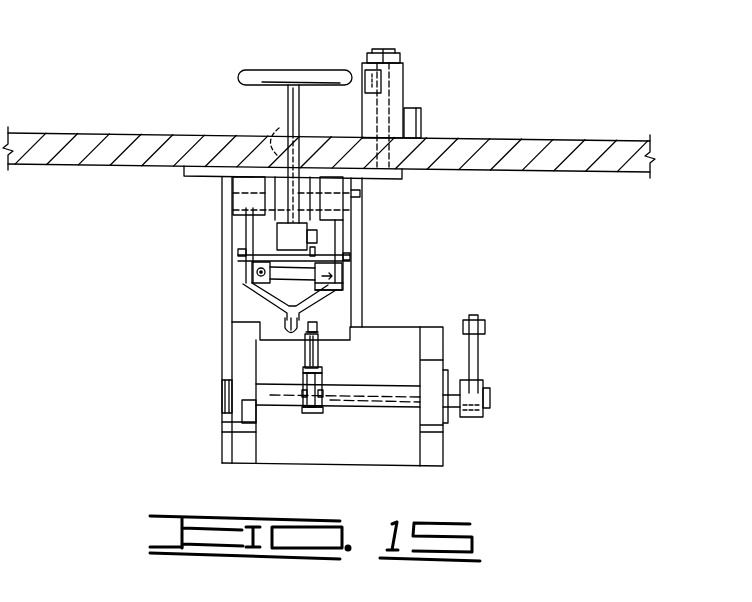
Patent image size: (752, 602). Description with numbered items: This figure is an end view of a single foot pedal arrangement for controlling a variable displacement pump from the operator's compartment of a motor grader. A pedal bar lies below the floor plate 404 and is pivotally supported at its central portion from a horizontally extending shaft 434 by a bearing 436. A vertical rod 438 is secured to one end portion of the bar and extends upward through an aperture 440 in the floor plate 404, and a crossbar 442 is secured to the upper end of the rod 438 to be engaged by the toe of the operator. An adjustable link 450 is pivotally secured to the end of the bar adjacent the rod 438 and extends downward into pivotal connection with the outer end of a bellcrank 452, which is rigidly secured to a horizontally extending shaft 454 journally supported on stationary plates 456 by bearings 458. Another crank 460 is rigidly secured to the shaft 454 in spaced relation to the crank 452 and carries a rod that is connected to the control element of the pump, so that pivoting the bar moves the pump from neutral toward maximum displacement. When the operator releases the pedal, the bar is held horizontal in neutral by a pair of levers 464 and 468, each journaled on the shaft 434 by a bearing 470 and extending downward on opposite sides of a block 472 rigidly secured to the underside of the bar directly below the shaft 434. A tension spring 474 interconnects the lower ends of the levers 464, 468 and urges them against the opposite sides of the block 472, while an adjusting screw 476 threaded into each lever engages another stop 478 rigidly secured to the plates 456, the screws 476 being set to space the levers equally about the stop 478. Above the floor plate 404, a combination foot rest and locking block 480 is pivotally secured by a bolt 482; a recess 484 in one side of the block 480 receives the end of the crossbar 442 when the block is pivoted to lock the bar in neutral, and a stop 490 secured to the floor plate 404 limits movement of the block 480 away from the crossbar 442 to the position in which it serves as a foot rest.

The floor plate 404 is at (467, 148).
The horizontally extending shaft 434 is at (362, 196).
The bearing 436 is at (277, 226).
The vertical rod 438 is at (290, 99).
The aperture 440 is at (268, 127).
The crossbar 442 is at (258, 68).
The adjustable link 450 is at (315, 330).
The bellcrank 452 is at (310, 413).
The horizontally extending shaft 454 is at (353, 394).
The stationary plates 456 is at (228, 312).
The bearings 458 is at (238, 446).
The crank 460 is at (475, 358).
The lever 464 is at (247, 285).
The lever 468 is at (337, 289).
The bearing 470 is at (240, 195).
The block 472 is at (238, 253).
The tension spring 474 is at (288, 332).
The adjusting screw 476 is at (257, 272).
The stop 478 is at (285, 279).
The combination foot rest and locking block 480 is at (396, 70).
The bolt 482 is at (390, 52).
The recess 484 is at (357, 80).
The stop 490 is at (412, 118).